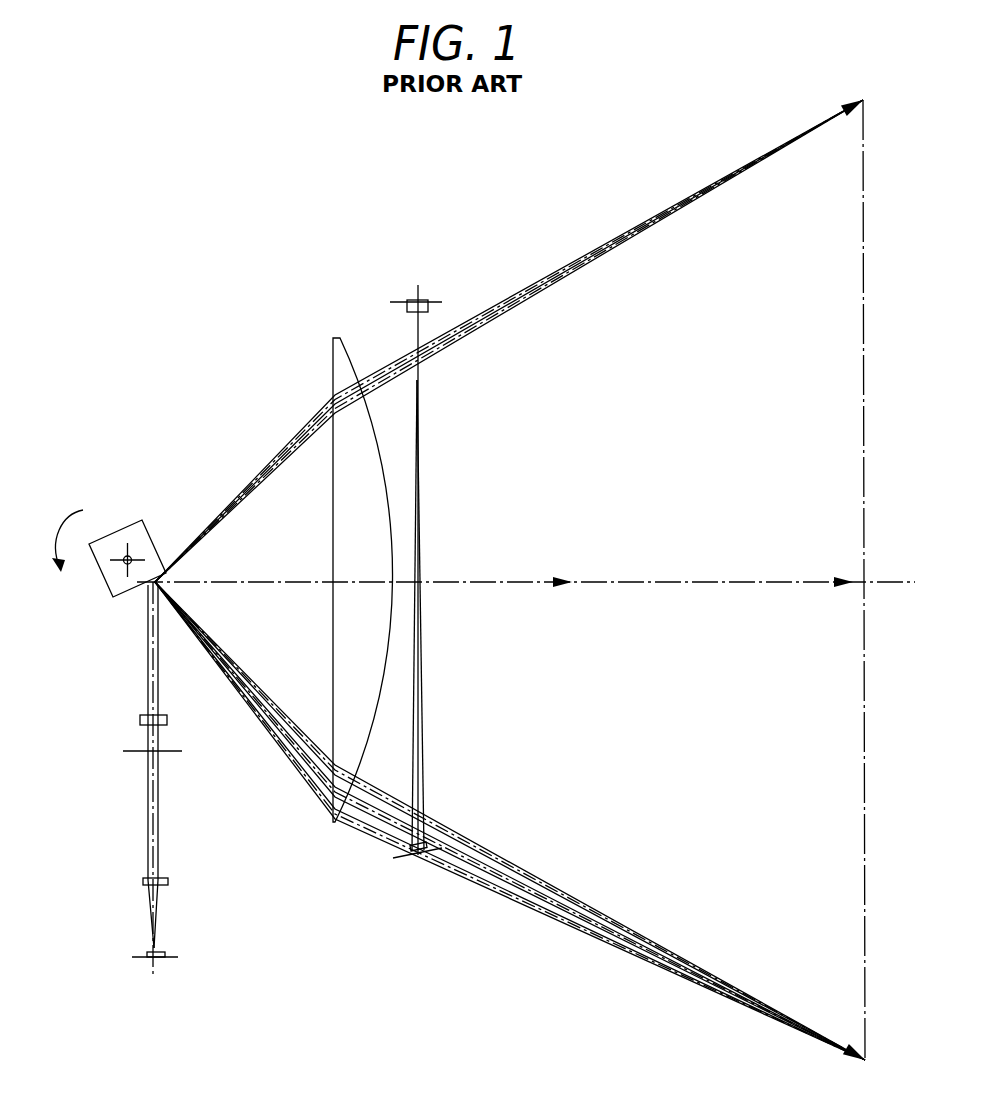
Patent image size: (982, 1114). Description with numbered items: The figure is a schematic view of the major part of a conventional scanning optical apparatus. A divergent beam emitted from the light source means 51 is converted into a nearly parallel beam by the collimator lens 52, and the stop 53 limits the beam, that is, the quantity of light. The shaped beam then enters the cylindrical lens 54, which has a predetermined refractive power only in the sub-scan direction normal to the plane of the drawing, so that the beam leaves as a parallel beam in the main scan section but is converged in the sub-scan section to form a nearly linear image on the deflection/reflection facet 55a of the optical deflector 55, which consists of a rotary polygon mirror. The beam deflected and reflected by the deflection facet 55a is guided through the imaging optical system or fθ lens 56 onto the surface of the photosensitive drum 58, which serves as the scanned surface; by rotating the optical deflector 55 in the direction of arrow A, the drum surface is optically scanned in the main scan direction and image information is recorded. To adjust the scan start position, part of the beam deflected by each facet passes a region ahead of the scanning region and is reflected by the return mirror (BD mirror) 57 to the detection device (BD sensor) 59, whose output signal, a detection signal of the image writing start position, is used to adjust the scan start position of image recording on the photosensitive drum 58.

The light source means 51 is at (136, 958).
The collimator lens 52 is at (143, 884).
The stop 53 is at (130, 751).
The cylindrical lens 54 is at (140, 720).
The optical deflector 55 is at (100, 583).
The deflection/reflection facet 55a is at (127, 598).
The imaging optical system (fθ lens) 56 is at (333, 822).
The return mirror (BD mirror) 57 is at (408, 862).
The photosensitive drum 58 is at (865, 470).
The detection device (BD sensor) 59 is at (442, 302).
The direction of arrow A is at (62, 523).